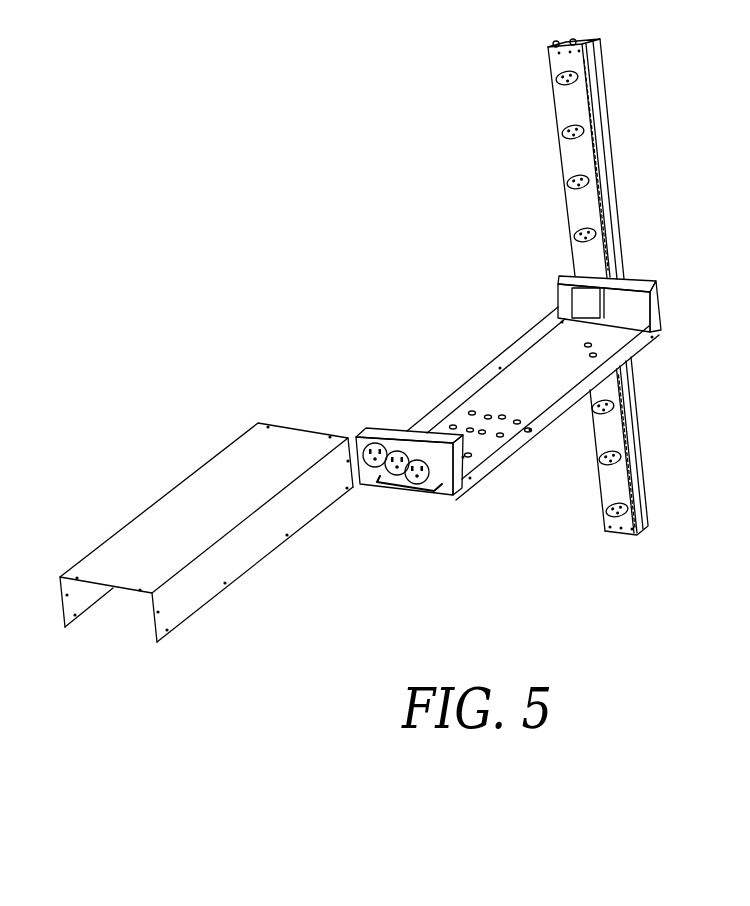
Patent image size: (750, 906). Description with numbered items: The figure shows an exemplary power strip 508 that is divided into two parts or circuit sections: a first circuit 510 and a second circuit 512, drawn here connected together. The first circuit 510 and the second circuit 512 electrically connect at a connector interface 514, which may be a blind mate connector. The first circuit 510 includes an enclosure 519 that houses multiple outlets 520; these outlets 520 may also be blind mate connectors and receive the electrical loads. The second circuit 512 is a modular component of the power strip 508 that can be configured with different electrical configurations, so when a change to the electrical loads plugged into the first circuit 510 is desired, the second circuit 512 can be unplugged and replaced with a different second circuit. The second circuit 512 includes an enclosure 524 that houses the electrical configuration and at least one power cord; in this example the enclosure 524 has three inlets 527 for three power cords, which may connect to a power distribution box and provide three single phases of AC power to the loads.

The power strip 508 is at (416, 131).
The first circuit 510 is at (612, 53).
The second circuit 512 is at (474, 366).
The connector interface 514 is at (578, 298).
The enclosure 519 is at (572, 152).
The outlets 520 is at (578, 78).
The enclosure 524 is at (238, 437).
The inlets 527 is at (374, 468).